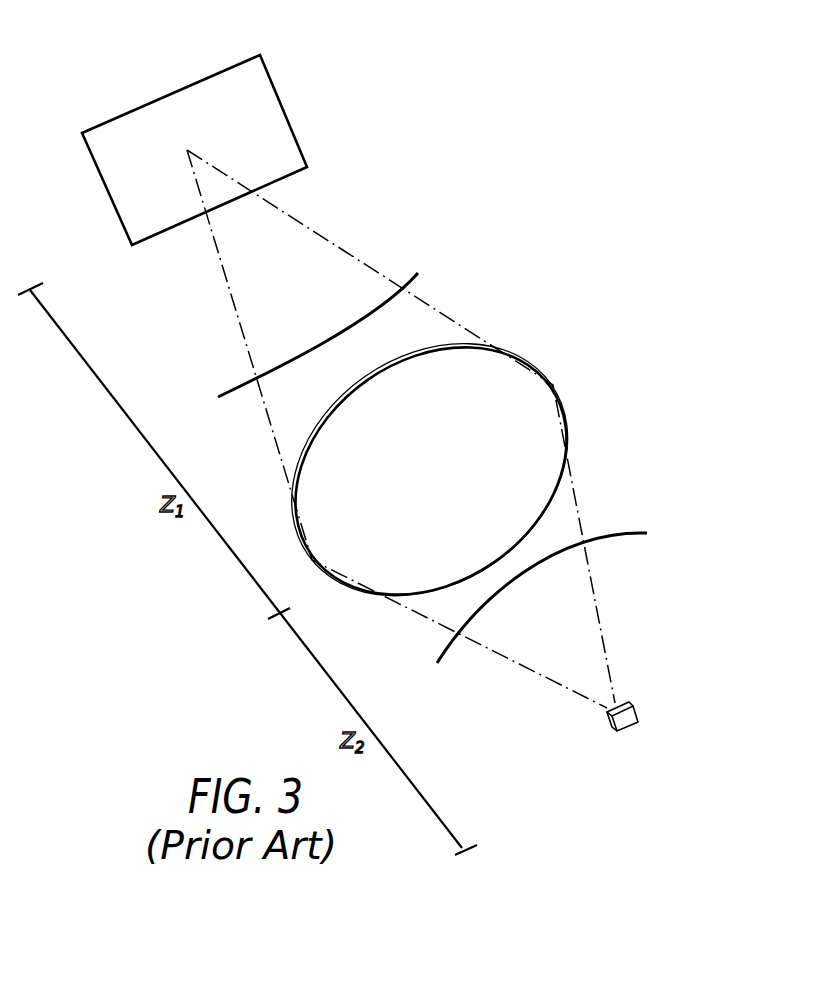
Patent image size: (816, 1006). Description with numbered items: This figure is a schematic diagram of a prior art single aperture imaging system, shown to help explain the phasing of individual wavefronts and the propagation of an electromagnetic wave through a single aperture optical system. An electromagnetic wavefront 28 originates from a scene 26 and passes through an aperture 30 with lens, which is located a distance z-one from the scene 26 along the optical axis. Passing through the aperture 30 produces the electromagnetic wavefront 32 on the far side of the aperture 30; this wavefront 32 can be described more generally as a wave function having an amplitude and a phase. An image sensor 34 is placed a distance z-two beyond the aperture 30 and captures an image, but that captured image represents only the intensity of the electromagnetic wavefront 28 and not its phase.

The scene 26 is at (158, 100).
The electromagnetic wavefront 28 is at (380, 307).
The aperture 30 is at (470, 348).
The electromagnetic wavefront 32 is at (613, 537).
The image sensor 34 is at (633, 702).